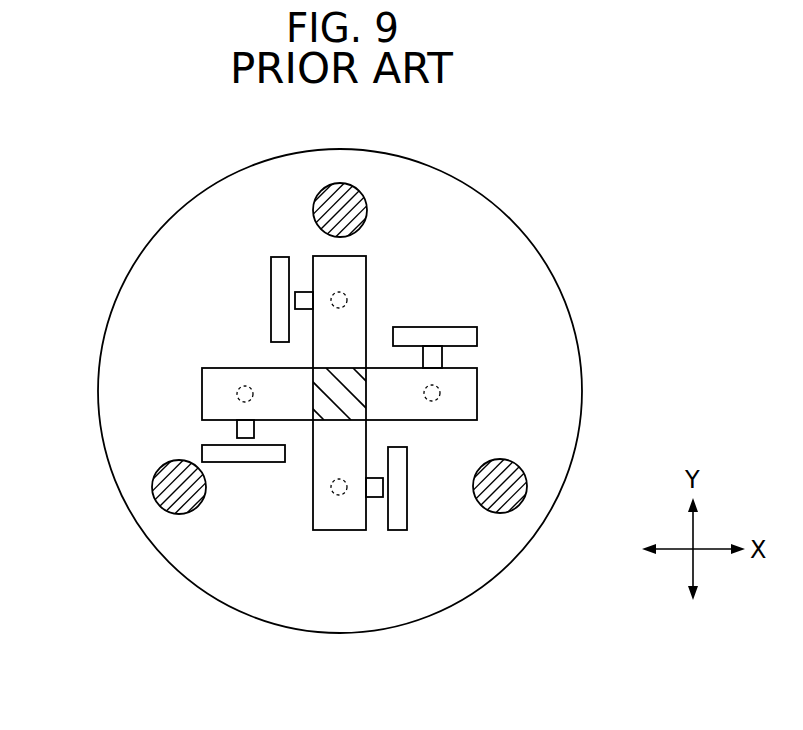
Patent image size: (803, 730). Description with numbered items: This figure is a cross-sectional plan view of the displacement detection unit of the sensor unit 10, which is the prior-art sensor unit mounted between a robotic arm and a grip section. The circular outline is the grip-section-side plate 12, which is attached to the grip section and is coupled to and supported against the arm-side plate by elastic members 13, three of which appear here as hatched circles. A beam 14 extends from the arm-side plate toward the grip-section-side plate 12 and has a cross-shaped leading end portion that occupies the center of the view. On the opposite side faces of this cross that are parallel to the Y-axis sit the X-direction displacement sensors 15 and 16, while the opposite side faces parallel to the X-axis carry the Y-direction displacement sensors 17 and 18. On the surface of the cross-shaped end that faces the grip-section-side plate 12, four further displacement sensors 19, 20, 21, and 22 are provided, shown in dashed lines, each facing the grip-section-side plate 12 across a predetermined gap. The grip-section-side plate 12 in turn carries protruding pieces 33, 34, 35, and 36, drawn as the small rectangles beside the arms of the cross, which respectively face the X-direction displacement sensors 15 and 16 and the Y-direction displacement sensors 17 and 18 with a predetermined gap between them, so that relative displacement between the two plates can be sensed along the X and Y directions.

The sensor unit 10 is at (590, 250).
The grip-section-side plate 12 is at (553, 302).
The elastic members 13 is at (522, 492).
The beam 14 is at (360, 310).
The X-direction displacement sensor 15 is at (373, 492).
The X-direction displacement sensor 16 is at (303, 292).
The Y-direction displacement sensor 17 is at (440, 357).
The Y-direction displacement sensor 18 is at (237, 432).
The displacement sensor 19 is at (440, 393).
The displacement sensor 20 is at (348, 294).
The displacement sensor 21 is at (237, 396).
The displacement sensor 22 is at (341, 495).
The protruding piece 33 is at (400, 508).
The protruding piece 34 is at (277, 287).
The protruding piece 35 is at (477, 337).
The protruding piece 36 is at (241, 455).